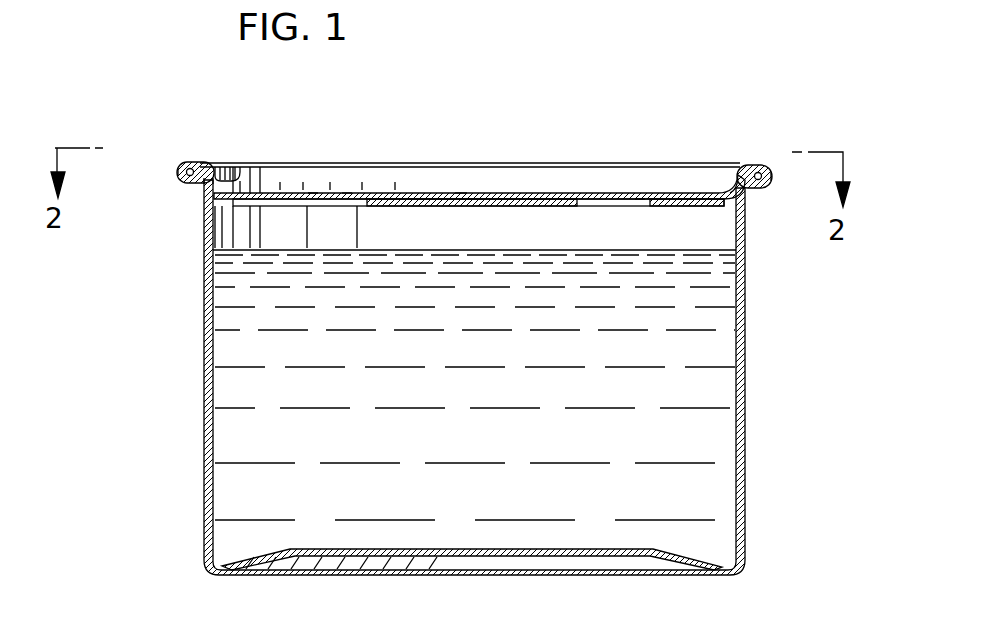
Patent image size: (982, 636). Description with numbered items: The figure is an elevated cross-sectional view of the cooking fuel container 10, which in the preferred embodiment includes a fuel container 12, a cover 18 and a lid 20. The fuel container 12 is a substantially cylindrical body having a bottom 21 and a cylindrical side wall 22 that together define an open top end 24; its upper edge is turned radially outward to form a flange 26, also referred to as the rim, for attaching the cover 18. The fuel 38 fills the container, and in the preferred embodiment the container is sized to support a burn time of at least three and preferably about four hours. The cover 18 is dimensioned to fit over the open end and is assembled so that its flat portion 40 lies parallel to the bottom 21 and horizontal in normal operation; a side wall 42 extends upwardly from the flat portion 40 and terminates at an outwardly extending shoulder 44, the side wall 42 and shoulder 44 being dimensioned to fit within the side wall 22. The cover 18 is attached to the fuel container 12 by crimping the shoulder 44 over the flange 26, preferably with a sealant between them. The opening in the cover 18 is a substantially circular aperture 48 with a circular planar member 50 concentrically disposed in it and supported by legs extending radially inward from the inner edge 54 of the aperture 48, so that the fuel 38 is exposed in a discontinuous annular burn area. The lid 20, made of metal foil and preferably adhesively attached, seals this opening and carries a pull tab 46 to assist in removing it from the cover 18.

The cooking fuel container 10 is at (183, 342).
The fuel container 12 is at (748, 390).
The cover 18 is at (752, 166).
The lid 20 is at (608, 193).
The bottom 21 is at (500, 549).
The cylindrical side wall 22 is at (745, 455).
The open top end 24 is at (207, 184).
The flange 26 is at (764, 163).
The fuel 38 is at (270, 385).
The flat portion 40 is at (293, 207).
The side wall 42 is at (238, 176).
The shoulder 44 is at (185, 158).
The pull tab 46 is at (736, 168).
The aperture 48 is at (347, 190).
The circular planar member 50 is at (461, 192).
The inner edge 54 is at (313, 193).